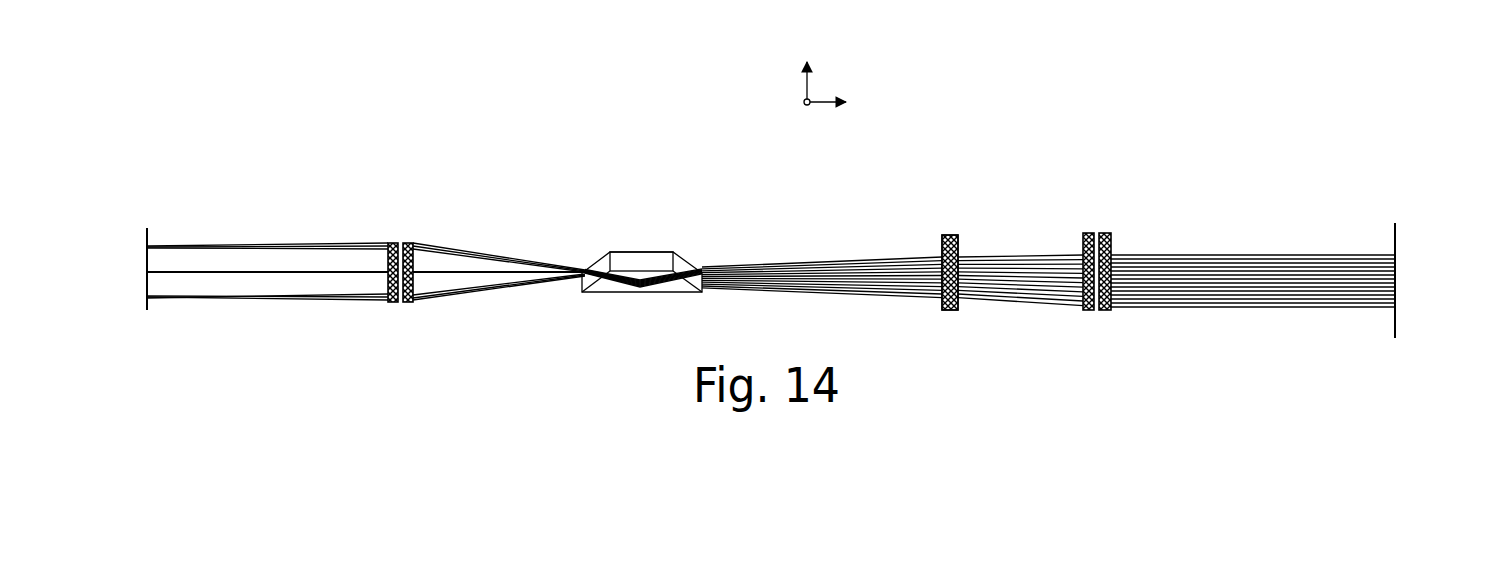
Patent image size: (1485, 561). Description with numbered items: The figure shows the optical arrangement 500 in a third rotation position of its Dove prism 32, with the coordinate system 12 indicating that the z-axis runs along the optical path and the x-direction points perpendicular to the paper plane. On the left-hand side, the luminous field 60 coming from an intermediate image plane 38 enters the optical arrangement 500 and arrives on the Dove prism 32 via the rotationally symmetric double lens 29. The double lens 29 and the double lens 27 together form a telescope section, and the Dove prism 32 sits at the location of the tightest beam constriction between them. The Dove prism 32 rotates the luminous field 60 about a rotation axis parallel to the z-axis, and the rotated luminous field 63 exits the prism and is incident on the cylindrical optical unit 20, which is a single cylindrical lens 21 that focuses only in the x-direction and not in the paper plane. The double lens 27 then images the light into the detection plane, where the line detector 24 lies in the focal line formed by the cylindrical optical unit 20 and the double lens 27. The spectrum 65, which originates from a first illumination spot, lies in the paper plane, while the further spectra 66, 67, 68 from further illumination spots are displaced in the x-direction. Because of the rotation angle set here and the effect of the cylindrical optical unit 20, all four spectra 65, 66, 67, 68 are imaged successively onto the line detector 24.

The coordinate system 12 is at (807, 78).
The optical arrangement 500 is at (1032, 170).
The luminous field 60 is at (291, 200).
The rotated luminous field 63 is at (849, 266).
The intermediate image plane 38 is at (147, 228).
The spectrum 65 is at (144, 250).
The spectrum 66 is at (1395, 270).
The spectrum 67 is at (1395, 282).
The spectrum 68 is at (1395, 294).
The double lens 29 is at (389, 243).
The Dove prism 32 is at (646, 252).
The cylindrical optical unit 20 is at (947, 235).
The cylindrical lens 21 is at (950, 272).
The double lens 27 is at (1088, 233).
The line detector 24 is at (1393, 227).